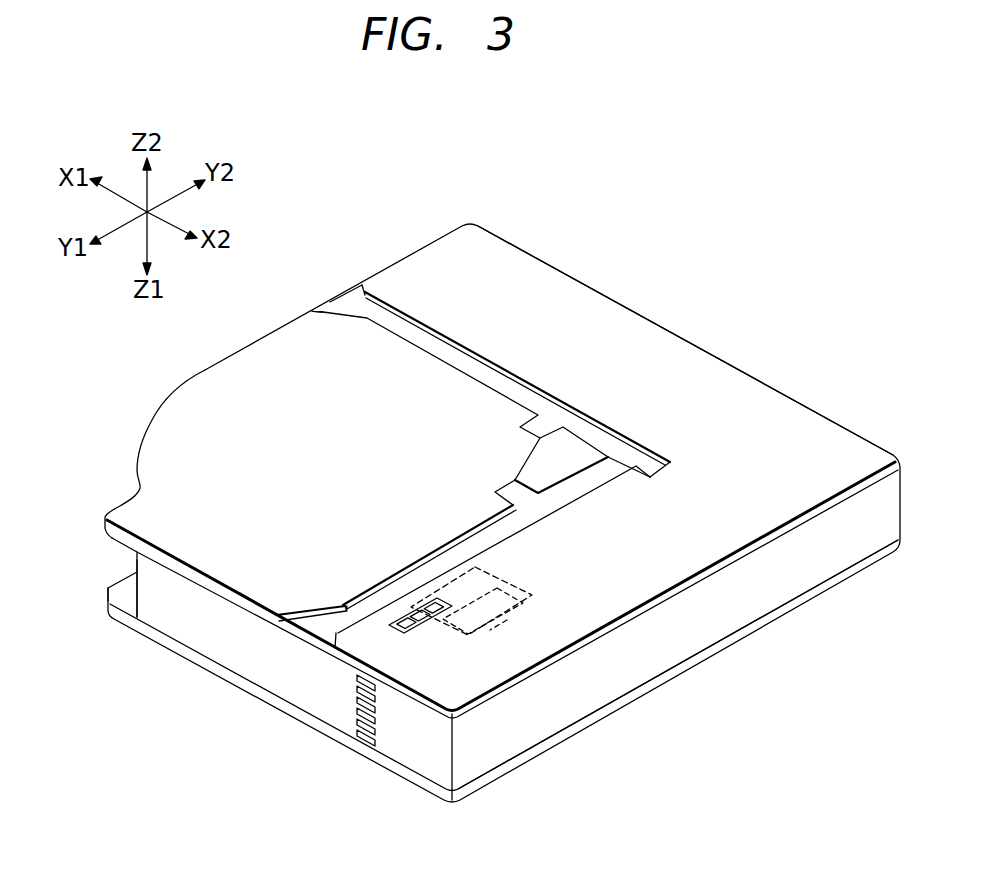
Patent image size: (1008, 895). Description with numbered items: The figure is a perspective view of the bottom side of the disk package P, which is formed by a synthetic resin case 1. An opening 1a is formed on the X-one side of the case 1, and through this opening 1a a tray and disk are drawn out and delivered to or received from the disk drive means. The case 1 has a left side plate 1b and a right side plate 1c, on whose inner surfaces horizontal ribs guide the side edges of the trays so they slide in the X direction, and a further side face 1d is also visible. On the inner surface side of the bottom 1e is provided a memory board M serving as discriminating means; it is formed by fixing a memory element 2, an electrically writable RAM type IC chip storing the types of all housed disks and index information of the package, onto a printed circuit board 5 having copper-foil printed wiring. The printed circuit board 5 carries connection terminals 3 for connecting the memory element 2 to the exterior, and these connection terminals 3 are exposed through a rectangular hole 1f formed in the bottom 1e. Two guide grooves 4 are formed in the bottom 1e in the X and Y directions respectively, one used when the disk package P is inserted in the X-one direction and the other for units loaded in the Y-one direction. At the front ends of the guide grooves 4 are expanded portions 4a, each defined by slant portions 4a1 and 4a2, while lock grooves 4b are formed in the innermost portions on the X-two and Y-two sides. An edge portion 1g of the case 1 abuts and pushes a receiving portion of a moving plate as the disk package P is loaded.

The synthetic resin case 1 is at (757, 376).
The opening 1a is at (127, 563).
The left side plate 1b is at (815, 422).
The right side plate 1c is at (163, 618).
The front side face of housing 1d is at (657, 663).
The bottom 1e is at (672, 565).
The rectangular hole 1f is at (392, 633).
The edge portion 1g is at (205, 370).
The memory element 2 is at (523, 603).
The connection terminals 3 is at (440, 606).
The guide grooves 4 is at (456, 356).
The expanded portions 4a is at (343, 299).
The slant portion 4a1 is at (346, 313).
The slant portion 4a2 is at (365, 290).
The lock grooves 4b is at (497, 492).
The printed circuit board 5 is at (507, 620).
The memory board M is at (475, 567).
The disk package P is at (652, 313).